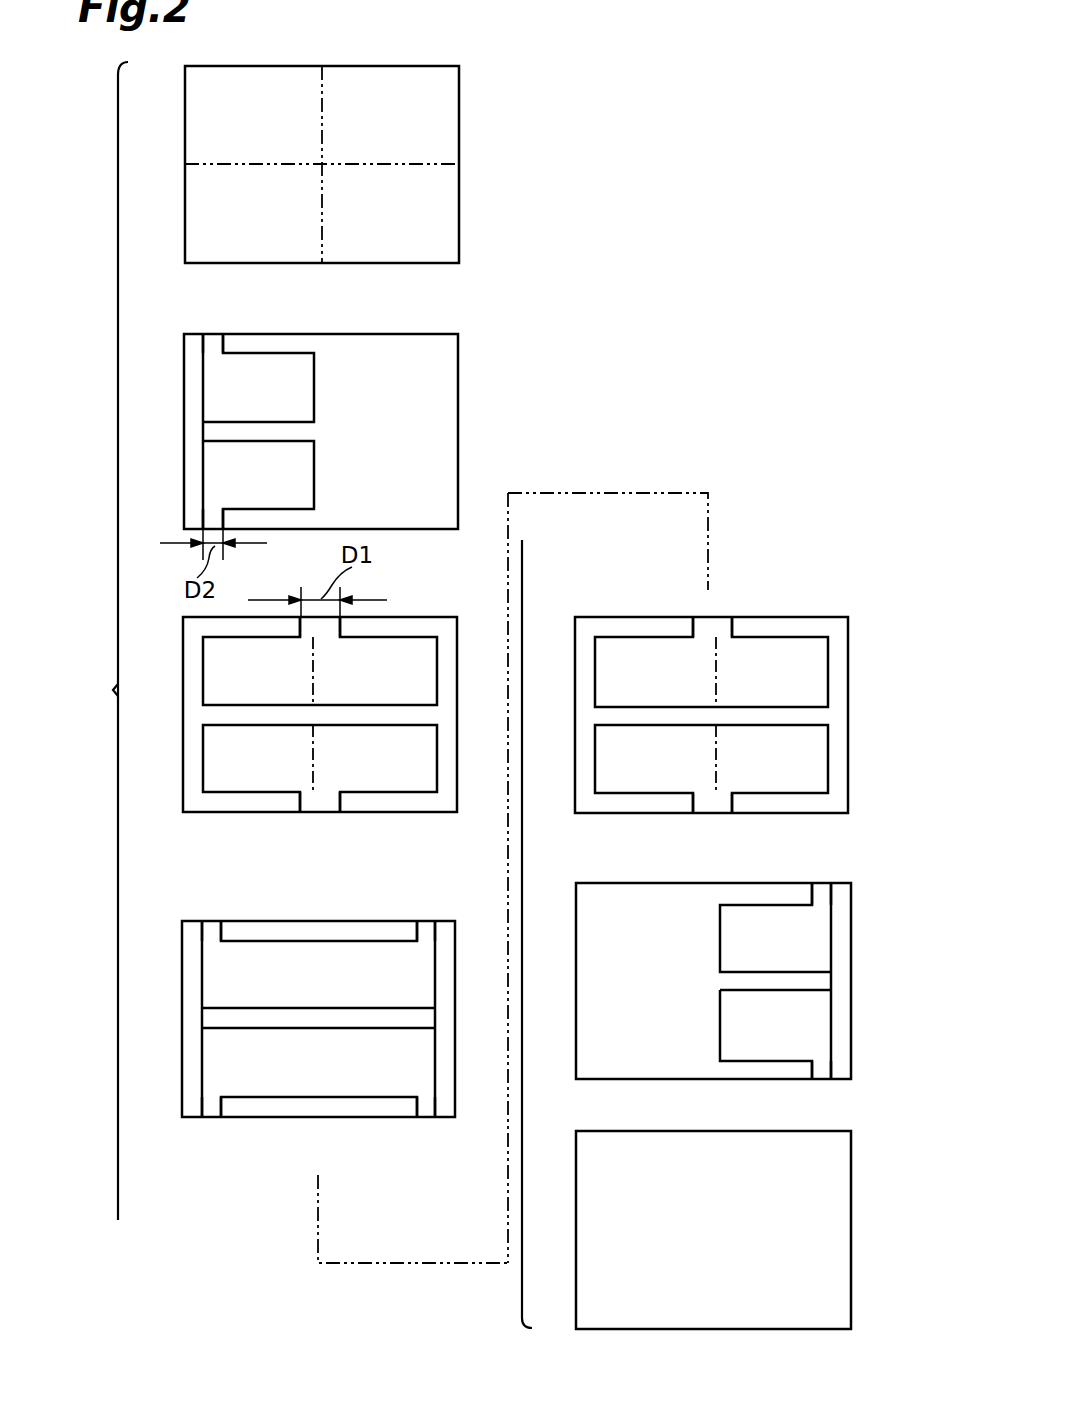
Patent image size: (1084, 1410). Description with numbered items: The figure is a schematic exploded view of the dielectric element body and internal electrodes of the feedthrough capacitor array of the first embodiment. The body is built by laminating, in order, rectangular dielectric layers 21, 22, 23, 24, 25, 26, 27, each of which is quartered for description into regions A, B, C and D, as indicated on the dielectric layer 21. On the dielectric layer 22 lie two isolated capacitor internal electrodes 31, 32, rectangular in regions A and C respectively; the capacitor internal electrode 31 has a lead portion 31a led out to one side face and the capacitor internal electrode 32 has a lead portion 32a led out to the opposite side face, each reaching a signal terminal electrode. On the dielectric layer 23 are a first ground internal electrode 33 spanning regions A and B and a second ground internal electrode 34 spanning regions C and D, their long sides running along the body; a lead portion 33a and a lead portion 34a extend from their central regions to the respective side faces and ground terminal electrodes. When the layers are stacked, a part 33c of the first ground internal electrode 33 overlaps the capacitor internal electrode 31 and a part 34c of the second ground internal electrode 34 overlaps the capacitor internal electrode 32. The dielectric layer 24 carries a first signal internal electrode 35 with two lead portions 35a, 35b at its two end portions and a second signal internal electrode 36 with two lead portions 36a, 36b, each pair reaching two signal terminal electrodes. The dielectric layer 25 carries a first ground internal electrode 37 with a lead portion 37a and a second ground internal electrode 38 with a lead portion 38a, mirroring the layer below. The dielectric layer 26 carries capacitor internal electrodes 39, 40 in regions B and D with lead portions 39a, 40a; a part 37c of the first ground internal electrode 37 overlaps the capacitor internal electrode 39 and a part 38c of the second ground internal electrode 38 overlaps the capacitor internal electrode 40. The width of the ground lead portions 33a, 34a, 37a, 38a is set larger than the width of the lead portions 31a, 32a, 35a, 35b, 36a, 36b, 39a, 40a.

The dielectric layer 21 is at (459, 101).
The dielectric layer 22 is at (458, 365).
The dielectric layer 23 is at (457, 648).
The dielectric layer 24 is at (455, 958).
The dielectric layer 25 is at (578, 648).
The dielectric layer 26 is at (578, 910).
The dielectric layer 27 is at (578, 1172).
The capacitor internal electrode 31 is at (212, 398).
The lead portion 31a is at (212, 347).
The capacitor internal electrode 32 is at (212, 478).
The lead portion 32a is at (212, 520).
The first ground internal electrode 33 is at (212, 651).
The lead portion 33a is at (328, 632).
The part of first ground internal electrode 33c is at (248, 680).
The second ground internal electrode 34 is at (212, 746).
The lead portion 34a is at (318, 800).
The part of second ground internal electrode 34c is at (248, 770).
The first signal internal electrode 35 is at (210, 976).
The lead portion 35a is at (211, 931).
The lead portion 35b is at (425, 931).
The second signal internal electrode 36 is at (212, 1063).
The lead portion 36a is at (211, 1106).
The lead portion 36b is at (426, 1106).
The first ground internal electrode 37 is at (822, 688).
The lead portion 37a is at (708, 625).
The part of first ground internal electrode 37c is at (812, 655).
The second ground internal electrode 38 is at (822, 776).
The lead portion 38a is at (710, 805).
The part of second ground internal electrode 38c is at (812, 748).
The capacitor internal electrode 39 is at (785, 942).
The lead portion 39a is at (825, 893).
The capacitor internal electrode 40 is at (785, 1018).
The lead portion 40a is at (825, 1063).